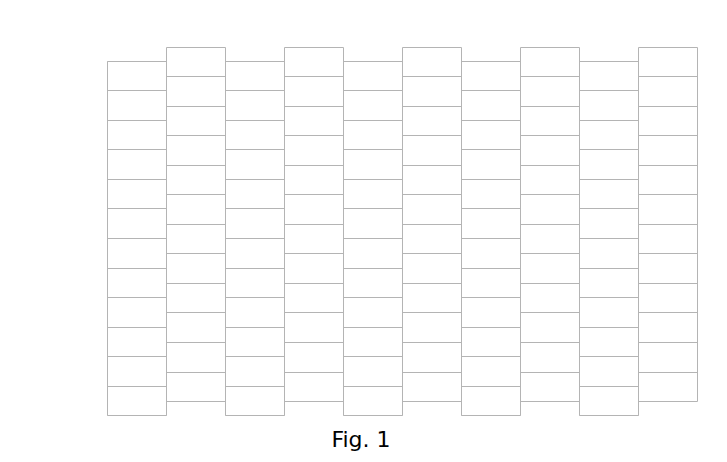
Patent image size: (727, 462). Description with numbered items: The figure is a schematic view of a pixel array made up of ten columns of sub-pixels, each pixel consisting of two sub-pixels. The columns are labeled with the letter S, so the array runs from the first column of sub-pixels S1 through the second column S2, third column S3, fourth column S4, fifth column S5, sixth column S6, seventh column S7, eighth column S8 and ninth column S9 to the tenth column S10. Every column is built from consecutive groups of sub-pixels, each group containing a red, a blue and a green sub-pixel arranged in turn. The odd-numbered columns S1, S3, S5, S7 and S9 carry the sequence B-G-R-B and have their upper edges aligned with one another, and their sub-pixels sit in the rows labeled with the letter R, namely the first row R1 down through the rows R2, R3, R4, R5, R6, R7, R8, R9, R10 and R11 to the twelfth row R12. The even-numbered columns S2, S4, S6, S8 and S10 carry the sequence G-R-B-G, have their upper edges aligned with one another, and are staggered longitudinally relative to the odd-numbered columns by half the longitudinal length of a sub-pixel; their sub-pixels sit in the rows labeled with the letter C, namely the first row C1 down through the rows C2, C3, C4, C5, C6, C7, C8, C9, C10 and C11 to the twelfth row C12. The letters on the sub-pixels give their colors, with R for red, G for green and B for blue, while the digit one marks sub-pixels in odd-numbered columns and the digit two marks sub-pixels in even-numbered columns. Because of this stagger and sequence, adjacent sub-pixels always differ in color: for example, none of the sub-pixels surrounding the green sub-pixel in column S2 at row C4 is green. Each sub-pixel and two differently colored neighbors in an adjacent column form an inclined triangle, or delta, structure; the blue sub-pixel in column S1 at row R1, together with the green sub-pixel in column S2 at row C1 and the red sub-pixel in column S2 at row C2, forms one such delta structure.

The first column of sub-pixels S1 is at (137, 220).
The second column of sub-pixels S2 is at (196, 213).
The third column of sub-pixels S3 is at (255, 220).
The fourth column of sub-pixels S4 is at (314, 213).
The fifth column of sub-pixels S5 is at (373, 220).
The sixth column of sub-pixels S6 is at (432, 213).
The seventh column of sub-pixels S7 is at (491, 220).
The eighth column of sub-pixels S8 is at (550, 213).
The ninth column of sub-pixels S9 is at (609, 220).
The tenth column of sub-pixels S10 is at (668, 213).
The first row of odd-numbered columns of sub-pixels R1 is at (356, 80).
The second row of odd-numbered columns of sub-pixels R2 is at (356, 109).
The third row of odd-numbered columns of sub-pixels R3 is at (356, 138).
The fourth row of odd-numbered columns of sub-pixels R4 is at (356, 169).
The fifth row of odd-numbered columns of sub-pixels R5 is at (356, 198).
The sixth row of odd-numbered columns of sub-pixels R6 is at (356, 227).
The seventh row of odd-numbered columns of sub-pixels R7 is at (356, 256).
The eighth row of odd-numbered columns of sub-pixels R8 is at (356, 285).
The ninth row of odd-numbered columns of sub-pixels R9 is at (356, 316).
The tenth row of odd-numbered columns of sub-pixels R10 is at (354, 345).
The eleventh row of odd-numbered columns of sub-pixels R11 is at (354, 374).
The twelfth row of odd-numbered columns of sub-pixels R12 is at (354, 403).
The first row of even-numbered columns of sub-pixels C1 is at (335, 63).
The second row of even-numbered columns of sub-pixels C2 is at (335, 92).
The third row of even-numbered columns of sub-pixels C3 is at (335, 121).
The fourth row of even-numbered columns of sub-pixels C4 is at (335, 150).
The fifth row of even-numbered columns of sub-pixels C5 is at (335, 179).
The sixth row of even-numbered columns of sub-pixels C6 is at (335, 208).
The seventh row of even-numbered columns of sub-pixels C7 is at (335, 237).
The eighth row of even-numbered columns of sub-pixels C8 is at (335, 266).
The ninth row of even-numbered columns of sub-pixels C9 is at (335, 295).
The tenth row of even-numbered columns of sub-pixels C10 is at (333, 324).
The eleventh row of even-numbered columns of sub-pixels C11 is at (333, 353).
The twelfth row of even-numbered columns of sub-pixels C12 is at (333, 382).